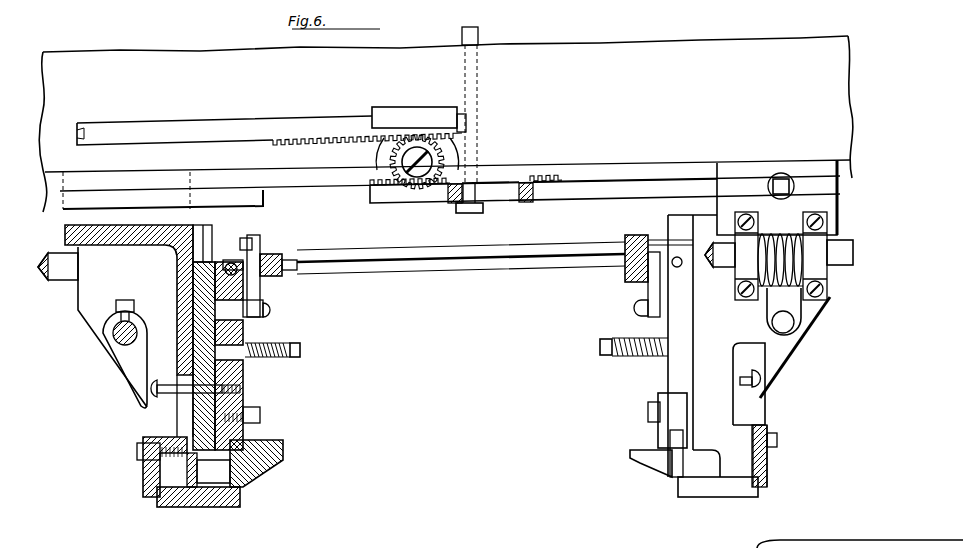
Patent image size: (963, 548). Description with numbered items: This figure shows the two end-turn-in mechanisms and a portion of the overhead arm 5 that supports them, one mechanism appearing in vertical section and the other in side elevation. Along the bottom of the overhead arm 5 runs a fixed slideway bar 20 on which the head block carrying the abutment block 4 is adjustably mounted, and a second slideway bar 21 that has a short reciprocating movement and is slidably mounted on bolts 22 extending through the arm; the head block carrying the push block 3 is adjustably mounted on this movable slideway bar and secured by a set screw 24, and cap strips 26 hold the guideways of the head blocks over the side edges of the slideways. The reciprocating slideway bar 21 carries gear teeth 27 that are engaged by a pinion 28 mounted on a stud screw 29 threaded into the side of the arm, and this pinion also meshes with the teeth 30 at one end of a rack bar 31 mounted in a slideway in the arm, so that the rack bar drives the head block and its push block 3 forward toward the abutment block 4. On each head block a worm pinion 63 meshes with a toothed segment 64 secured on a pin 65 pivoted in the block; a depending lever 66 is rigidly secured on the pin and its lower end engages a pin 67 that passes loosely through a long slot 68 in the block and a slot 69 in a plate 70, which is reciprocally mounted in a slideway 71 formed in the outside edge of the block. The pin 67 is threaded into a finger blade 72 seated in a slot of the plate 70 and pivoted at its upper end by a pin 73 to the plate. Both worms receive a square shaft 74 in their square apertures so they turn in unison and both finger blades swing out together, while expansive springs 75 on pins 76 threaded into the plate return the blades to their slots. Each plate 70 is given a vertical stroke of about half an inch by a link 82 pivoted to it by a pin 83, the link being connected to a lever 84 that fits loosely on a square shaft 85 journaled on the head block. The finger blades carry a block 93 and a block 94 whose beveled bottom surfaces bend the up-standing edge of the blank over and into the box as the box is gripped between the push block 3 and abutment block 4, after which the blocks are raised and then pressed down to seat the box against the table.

The push block 3 is at (722, 495).
The abutment block 4 is at (224, 500).
The overhead arm 5 is at (446, 124).
The fixed slideway bar 20 is at (265, 206).
The slideway bar 21 is at (615, 194).
The bolts 22 is at (479, 31).
The set screw 24 is at (782, 175).
The cap strips 26 is at (731, 172).
The gear teeth 27 is at (548, 180).
The pinion 28 is at (386, 163).
The stud screw 29 is at (450, 160).
The teeth 30 is at (300, 141).
The rack bar 31 is at (190, 128).
The worm pinion 63 is at (781, 252).
The toothed segment 64 is at (785, 297).
The pin 65 is at (785, 323).
The depending lever 66 is at (778, 362).
The pin 67 is at (745, 385).
The long slot 68 is at (186, 410).
The slot 69 is at (246, 405).
The plate 70 is at (678, 363).
The slideway 71 is at (204, 250).
The finger blade 72 is at (665, 422).
The pin 73 is at (677, 268).
The square shaft 74 is at (840, 260).
The expansive springs 75 is at (625, 358).
The pins 76 is at (601, 348).
The link 82 is at (650, 292).
The pin 83 is at (650, 316).
The lever 84 is at (638, 246).
The square shaft 85 is at (438, 276).
The block 93 is at (650, 458).
The block 94 is at (262, 470).